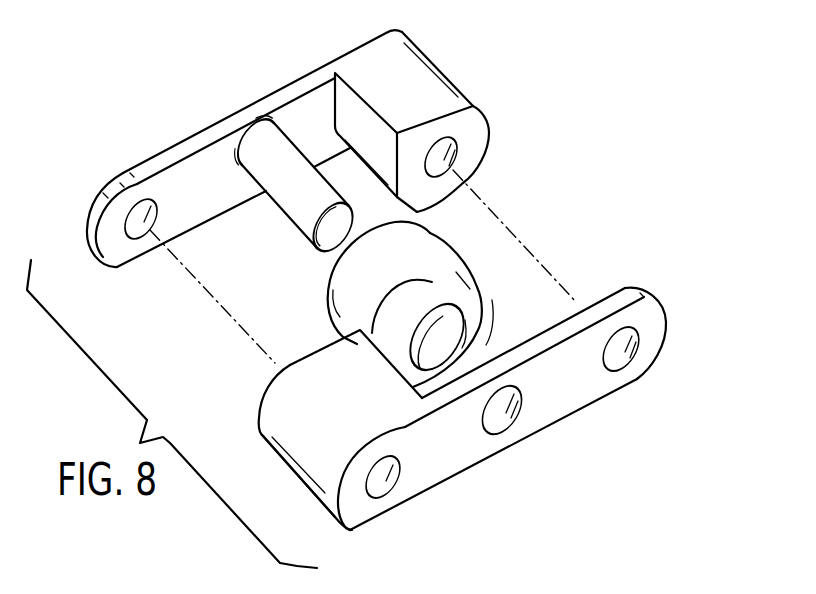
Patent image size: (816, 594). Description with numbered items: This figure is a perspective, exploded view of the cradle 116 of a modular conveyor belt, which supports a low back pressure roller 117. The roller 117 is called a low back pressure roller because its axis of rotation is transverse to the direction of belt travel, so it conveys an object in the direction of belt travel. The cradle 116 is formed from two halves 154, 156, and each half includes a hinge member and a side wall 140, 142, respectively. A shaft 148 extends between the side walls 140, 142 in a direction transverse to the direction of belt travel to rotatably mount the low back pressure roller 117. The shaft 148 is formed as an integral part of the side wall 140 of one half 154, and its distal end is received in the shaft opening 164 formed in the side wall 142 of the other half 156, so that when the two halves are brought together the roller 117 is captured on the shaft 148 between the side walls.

The cradle 116 is at (519, 119).
The low back pressure roller 117 is at (481, 283).
The side wall 140 is at (243, 108).
The side wall 142 is at (500, 450).
The shaft 148 is at (293, 204).
The half 154 is at (437, 29).
The half 156 is at (285, 514).
The shaft opening 164 is at (522, 386).